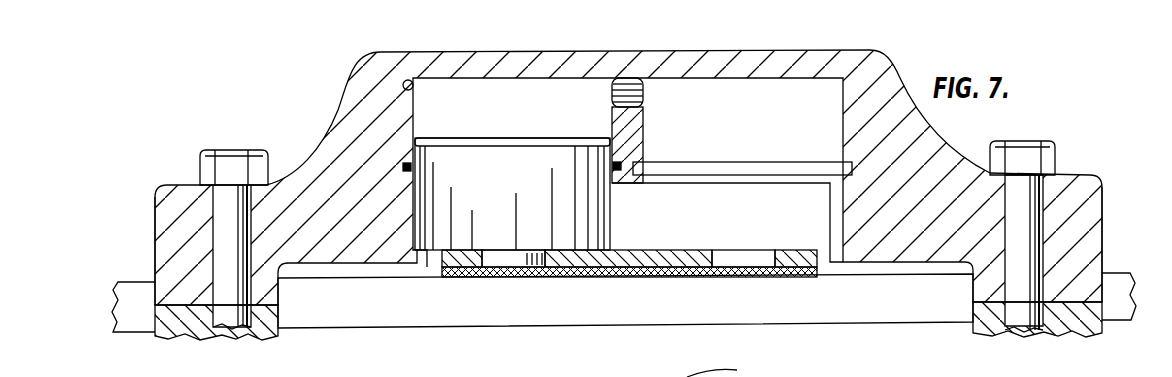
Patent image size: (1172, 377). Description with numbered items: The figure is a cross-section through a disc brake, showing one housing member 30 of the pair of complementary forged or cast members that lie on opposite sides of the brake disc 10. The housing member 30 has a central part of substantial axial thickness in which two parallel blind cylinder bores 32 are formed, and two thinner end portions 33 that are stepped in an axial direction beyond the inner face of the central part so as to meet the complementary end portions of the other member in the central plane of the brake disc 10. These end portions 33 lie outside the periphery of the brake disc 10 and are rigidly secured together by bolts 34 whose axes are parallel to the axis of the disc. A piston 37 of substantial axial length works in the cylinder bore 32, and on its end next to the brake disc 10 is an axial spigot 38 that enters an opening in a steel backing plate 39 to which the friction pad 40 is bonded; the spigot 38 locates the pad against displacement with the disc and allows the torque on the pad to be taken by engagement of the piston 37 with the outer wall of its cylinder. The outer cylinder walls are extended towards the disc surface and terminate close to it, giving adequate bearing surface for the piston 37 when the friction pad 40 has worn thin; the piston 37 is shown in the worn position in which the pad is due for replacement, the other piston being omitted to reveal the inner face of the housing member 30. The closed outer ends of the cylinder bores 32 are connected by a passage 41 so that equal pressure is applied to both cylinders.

The brake disc 10 is at (786, 298).
The housing member 30 is at (363, 73).
The cylinder bore 32 is at (515, 88).
The end portion 33 is at (183, 243).
The bolt 34 is at (237, 157).
The piston 37 is at (477, 153).
The axial spigot 38 is at (500, 257).
The steel backing plate 39 is at (588, 262).
The friction pad 40 is at (682, 270).
The passage 41 is at (627, 95).